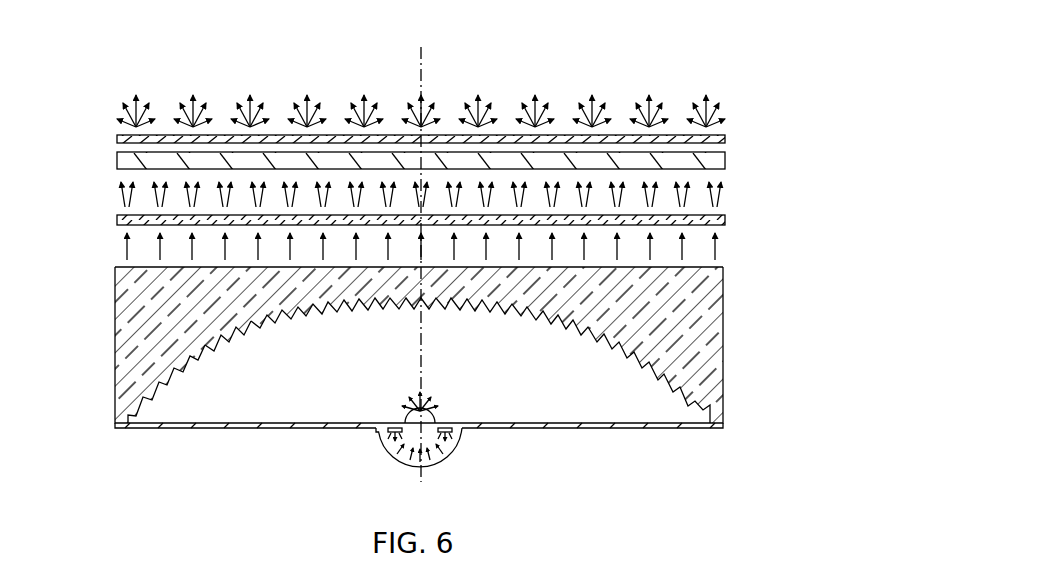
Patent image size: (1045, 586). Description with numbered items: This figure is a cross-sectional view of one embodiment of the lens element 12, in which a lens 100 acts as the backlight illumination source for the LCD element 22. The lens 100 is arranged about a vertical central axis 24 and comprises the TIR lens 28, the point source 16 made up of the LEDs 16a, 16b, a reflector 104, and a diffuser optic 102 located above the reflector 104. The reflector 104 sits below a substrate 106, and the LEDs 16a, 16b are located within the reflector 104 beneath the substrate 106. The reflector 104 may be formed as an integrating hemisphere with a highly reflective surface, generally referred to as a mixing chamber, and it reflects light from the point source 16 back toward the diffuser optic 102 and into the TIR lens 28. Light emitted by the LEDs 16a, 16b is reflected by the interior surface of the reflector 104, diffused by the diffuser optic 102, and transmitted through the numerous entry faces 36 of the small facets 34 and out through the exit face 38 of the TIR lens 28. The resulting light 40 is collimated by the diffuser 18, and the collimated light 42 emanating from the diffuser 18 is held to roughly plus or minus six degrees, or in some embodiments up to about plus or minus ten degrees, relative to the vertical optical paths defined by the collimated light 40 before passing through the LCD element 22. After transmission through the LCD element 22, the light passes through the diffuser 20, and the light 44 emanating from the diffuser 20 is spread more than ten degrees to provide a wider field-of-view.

The lens element 12 is at (620, 45).
The vertical central axis 24 is at (422, 78).
The light 44 is at (119, 110).
The diffuser 20 is at (726, 139).
The LCD element 22 is at (726, 159).
The collimated light 42 is at (120, 195).
The diffuser 18 is at (726, 220).
The collimated light 40 is at (120, 247).
The lens 100 is at (86, 341).
The TIR lens 28 is at (724, 316).
The exit face 38 is at (719, 267).
The small facets 34 is at (184, 385).
The entry faces 36 is at (229, 331).
The substrate 106 is at (614, 429).
The point source 16 is at (397, 397).
The diffuser optic 102 is at (440, 421).
The reflector 104 is at (440, 461).
The LED 16a is at (382, 432).
The LED 16b is at (458, 432).